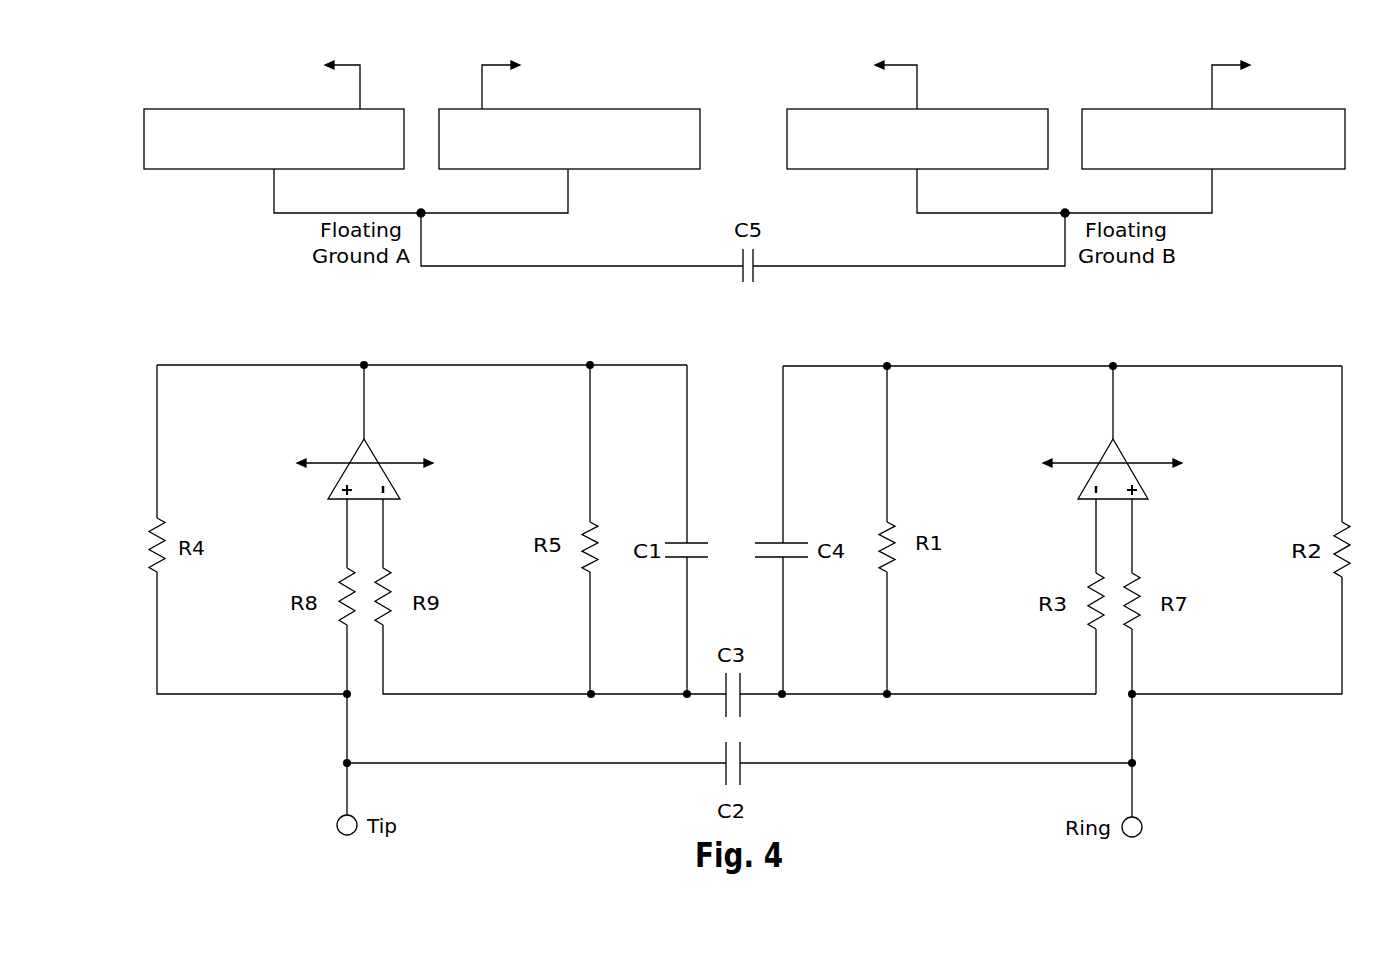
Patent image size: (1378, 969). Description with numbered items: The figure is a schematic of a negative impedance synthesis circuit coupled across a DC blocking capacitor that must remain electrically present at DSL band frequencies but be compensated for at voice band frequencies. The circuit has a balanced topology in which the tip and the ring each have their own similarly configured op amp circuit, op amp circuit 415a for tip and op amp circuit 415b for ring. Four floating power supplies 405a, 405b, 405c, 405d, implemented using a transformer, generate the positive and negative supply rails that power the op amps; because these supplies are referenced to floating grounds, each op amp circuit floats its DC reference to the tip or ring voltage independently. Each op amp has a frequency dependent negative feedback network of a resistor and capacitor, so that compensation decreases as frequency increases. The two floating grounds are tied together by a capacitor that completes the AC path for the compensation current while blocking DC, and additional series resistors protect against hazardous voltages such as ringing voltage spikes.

The floating power supply 405a is at (282, 133).
The floating power supply 405b is at (560, 133).
The floating power supply 405c is at (917, 133).
The floating power supply 405d is at (1205, 133).
The op amp circuit 415a is at (365, 432).
The op amp circuit 415b is at (1113, 432).